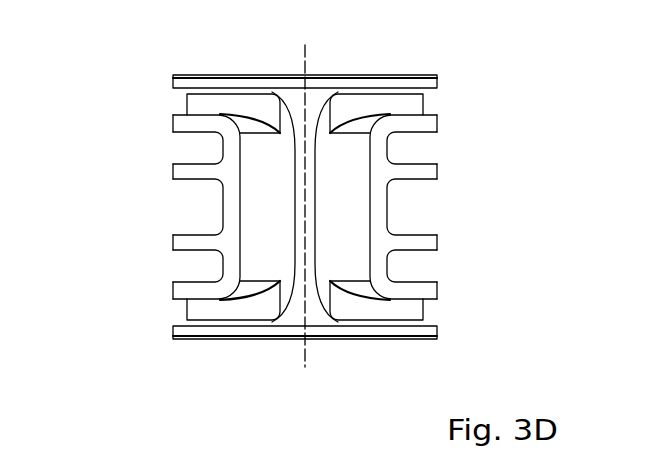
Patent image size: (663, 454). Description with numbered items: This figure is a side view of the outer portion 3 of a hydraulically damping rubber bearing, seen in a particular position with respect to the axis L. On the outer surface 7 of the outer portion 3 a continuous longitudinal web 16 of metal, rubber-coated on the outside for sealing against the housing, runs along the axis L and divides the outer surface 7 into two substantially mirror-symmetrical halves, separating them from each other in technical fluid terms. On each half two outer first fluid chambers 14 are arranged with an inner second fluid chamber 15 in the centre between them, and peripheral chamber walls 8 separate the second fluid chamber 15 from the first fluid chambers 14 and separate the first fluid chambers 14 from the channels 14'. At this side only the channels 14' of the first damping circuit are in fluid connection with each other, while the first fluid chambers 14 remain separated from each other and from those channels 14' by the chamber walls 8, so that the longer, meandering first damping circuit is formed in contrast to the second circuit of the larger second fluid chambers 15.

The outer portion 3 is at (150, 63).
The outer surface 7 is at (438, 123).
The chamber walls 8 is at (175, 119).
The first fluid chambers 14 is at (306, 207).
The channels 14' is at (305, 179).
The second fluid chambers 15 is at (200, 212).
The longitudinal web 16 is at (295, 315).
The axis L is at (305, 348).